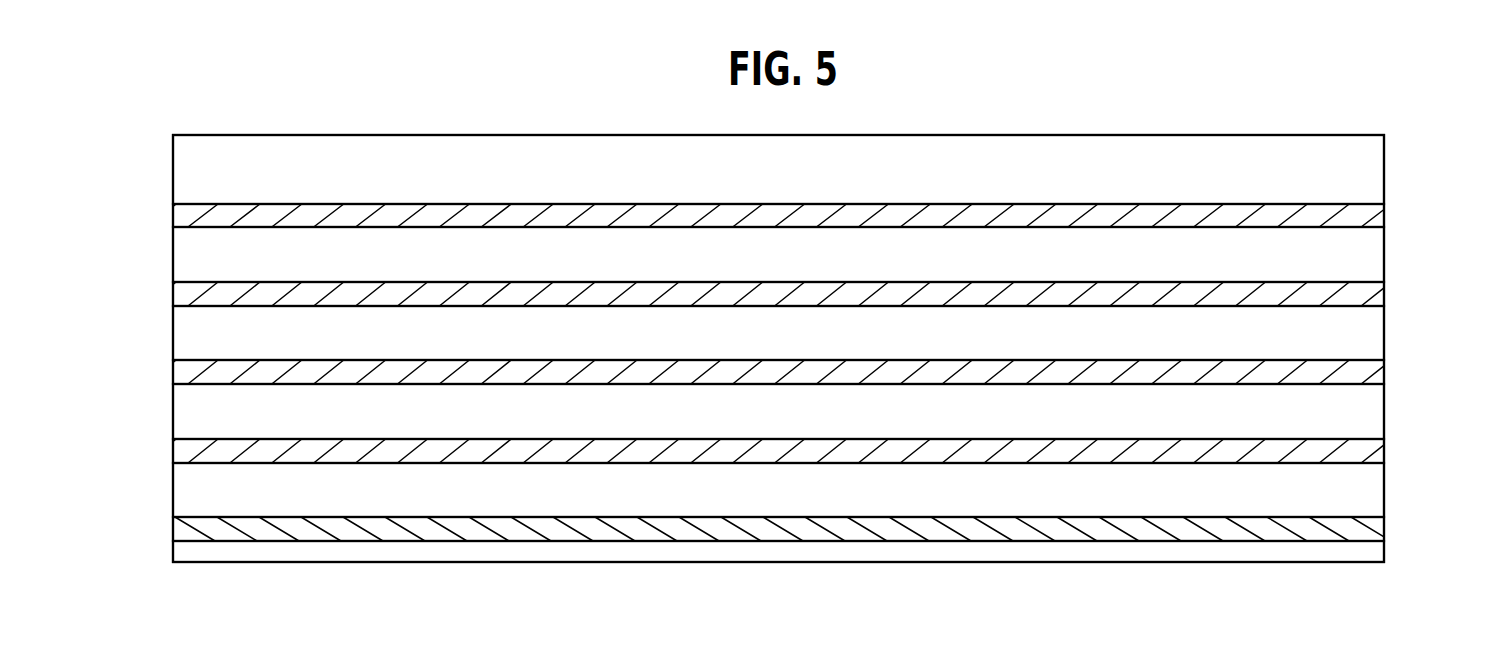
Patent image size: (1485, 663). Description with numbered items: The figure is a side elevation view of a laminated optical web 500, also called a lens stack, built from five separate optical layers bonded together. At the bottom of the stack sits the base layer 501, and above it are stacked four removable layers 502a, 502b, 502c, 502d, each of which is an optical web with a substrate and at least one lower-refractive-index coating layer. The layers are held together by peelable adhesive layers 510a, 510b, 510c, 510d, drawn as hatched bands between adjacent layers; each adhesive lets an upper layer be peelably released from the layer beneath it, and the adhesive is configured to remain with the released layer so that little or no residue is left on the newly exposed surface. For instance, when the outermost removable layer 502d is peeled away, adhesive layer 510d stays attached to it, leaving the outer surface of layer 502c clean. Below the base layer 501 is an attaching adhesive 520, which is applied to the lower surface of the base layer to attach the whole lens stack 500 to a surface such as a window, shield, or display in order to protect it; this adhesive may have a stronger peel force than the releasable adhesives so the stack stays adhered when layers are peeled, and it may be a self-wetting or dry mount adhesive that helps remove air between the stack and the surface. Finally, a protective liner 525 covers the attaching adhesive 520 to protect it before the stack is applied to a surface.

The laminated optical web 500 is at (1420, 145).
The base layer 501 is at (216, 488).
The removable layer 502a is at (216, 417).
The removable layer 502b is at (216, 324).
The removable layer 502c is at (216, 247).
The removable layer 502d is at (216, 164).
The peelable adhesive 510a is at (1377, 449).
The peelable adhesive 510b is at (1377, 371).
The peelable adhesive 510c is at (1377, 299).
The peelable adhesive 510d is at (1377, 226).
The attaching adhesive 520 is at (1377, 537).
The protective liner 525 is at (216, 546).